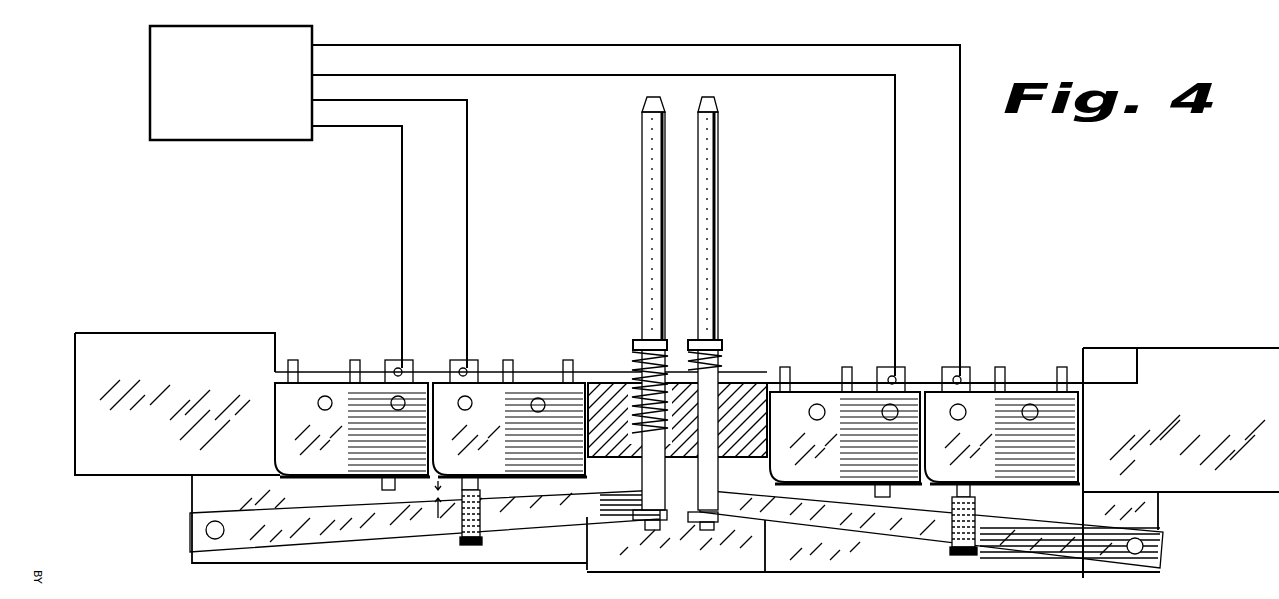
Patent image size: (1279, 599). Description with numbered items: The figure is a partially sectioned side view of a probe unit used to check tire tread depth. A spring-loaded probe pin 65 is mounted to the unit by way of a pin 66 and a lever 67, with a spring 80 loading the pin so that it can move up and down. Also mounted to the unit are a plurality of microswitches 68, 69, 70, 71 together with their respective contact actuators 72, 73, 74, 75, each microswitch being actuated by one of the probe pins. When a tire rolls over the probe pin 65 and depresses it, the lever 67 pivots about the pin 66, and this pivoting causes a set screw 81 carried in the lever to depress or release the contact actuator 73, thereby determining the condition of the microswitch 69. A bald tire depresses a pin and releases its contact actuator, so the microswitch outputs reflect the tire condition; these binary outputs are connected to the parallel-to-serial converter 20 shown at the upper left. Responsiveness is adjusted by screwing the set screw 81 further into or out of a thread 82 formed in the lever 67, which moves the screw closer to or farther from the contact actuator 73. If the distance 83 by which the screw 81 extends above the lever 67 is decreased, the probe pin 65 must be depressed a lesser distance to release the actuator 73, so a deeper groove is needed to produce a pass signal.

The parallel-to-serial converter 20 is at (150, 72).
The probe pin 65 is at (642, 156).
The pin 66 is at (206, 530).
The lever 67 is at (325, 528).
The microswitch 68 is at (292, 433).
The microswitch 69 is at (578, 462).
The microswitch 70 is at (838, 462).
The microswitch 71 is at (1060, 468).
The contact actuator 72 is at (382, 485).
The contact actuator 73 is at (482, 481).
The contact actuator 74 is at (892, 490).
The contact actuator 75 is at (972, 492).
The spring 80 is at (634, 370).
The set screw 81 is at (482, 541).
The thread 82 is at (503, 513).
The distance 83 is at (436, 498).